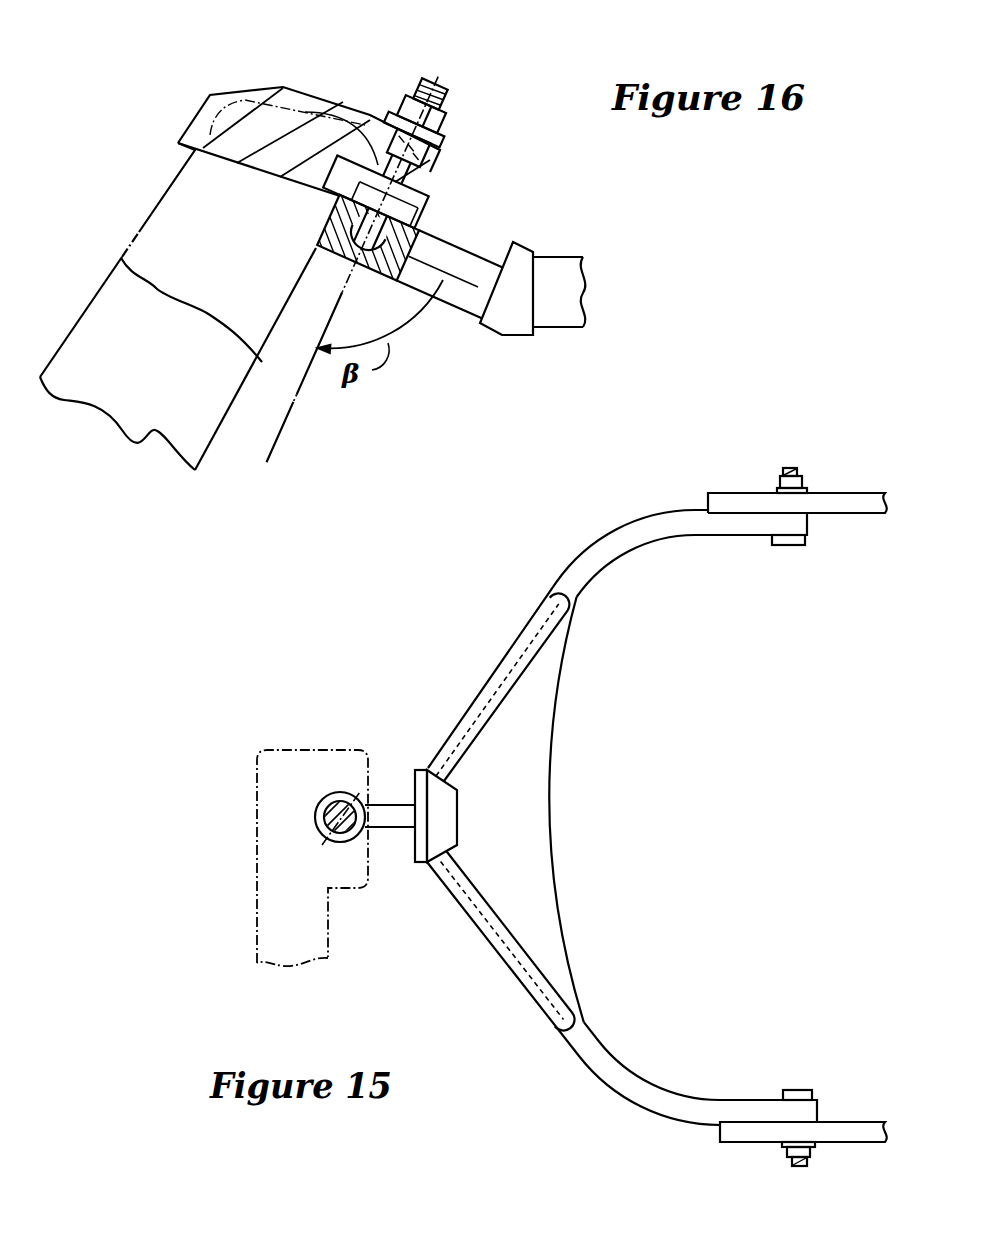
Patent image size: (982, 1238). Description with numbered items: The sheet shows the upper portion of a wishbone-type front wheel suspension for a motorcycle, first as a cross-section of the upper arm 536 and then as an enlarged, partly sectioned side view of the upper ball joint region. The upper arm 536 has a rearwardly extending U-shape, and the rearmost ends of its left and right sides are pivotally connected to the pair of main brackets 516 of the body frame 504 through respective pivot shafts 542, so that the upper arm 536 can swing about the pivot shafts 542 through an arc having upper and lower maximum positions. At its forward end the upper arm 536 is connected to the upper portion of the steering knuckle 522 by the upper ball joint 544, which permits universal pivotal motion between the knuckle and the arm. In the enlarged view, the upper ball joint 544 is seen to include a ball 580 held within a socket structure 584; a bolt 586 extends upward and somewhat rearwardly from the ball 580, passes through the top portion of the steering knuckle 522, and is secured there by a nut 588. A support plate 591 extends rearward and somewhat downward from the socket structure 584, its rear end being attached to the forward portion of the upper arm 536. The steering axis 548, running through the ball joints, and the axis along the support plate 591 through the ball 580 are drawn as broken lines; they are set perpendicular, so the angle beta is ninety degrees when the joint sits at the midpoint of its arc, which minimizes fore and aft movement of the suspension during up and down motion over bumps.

In FIG. 15, the body frame 504 is at (818, 490).
In FIG. 15, the main brackets 516 is at (850, 497).
In FIG. 16, the steering knuckle 522 is at (113, 405).
In FIG. 15, the steering knuckle 522 is at (363, 757).
In FIG. 16, the upper arm 536 is at (575, 297).
In FIG. 15, the upper arm 536 is at (643, 515).
In FIG. 15, the pivot shafts 542 is at (790, 546).
In FIG. 16, the upper ball joint 544 is at (450, 231).
In FIG. 15, the upper ball joint 544 is at (316, 792).
In FIG. 16, the steering axis 548 is at (292, 400).
In FIG. 15, the steering axis 548 is at (336, 817).
In FIG. 16, the ball 580 is at (338, 256).
In FIG. 15, the ball 580 is at (328, 840).
In FIG. 16, the socket structure 584 is at (325, 233).
In FIG. 15, the socket structure 584 is at (343, 843).
In FIG. 16, the bolt 586 is at (407, 163).
In FIG. 16, the nut 588 is at (405, 100).
In FIG. 16, the support plate 591 is at (445, 278).
In FIG. 15, the support plate 591 is at (385, 823).